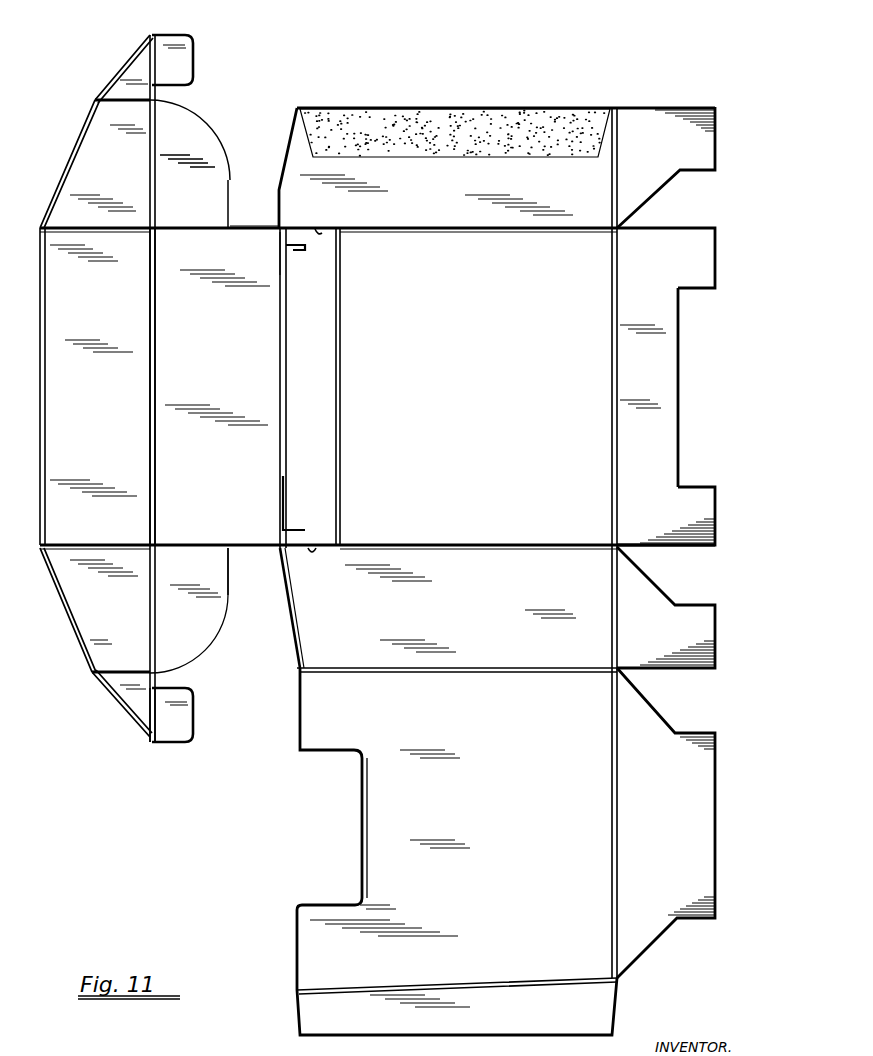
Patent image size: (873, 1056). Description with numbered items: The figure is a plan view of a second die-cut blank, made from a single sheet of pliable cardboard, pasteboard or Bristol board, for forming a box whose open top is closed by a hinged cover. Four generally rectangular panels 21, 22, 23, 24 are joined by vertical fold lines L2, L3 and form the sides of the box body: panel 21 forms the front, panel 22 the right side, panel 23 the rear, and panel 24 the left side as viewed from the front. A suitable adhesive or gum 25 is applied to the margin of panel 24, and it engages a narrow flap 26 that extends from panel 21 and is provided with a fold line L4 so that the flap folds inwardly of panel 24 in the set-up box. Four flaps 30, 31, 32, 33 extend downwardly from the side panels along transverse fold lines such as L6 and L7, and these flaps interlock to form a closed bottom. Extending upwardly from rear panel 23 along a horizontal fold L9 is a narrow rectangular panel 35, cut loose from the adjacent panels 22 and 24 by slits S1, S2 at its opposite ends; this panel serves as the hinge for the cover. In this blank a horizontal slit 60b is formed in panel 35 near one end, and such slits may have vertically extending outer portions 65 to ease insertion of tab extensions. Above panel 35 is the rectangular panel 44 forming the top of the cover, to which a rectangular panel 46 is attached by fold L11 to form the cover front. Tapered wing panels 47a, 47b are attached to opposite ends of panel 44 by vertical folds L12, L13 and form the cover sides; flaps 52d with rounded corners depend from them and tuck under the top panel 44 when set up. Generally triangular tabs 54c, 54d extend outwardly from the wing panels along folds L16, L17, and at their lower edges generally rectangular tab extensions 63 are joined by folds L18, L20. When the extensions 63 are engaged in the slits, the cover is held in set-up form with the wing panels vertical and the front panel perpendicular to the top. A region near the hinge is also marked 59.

The fold L20 is at (150, 60).
The triangular tab 54d is at (120, 90).
The fold L17 is at (100, 106).
The tapered wing panel 47b is at (88, 163).
The flap 52d is at (200, 143).
The tab extension 63 is at (181, 55).
The slot 59 is at (265, 228).
The horizontal slit 60b is at (278, 275).
The vertical fold L13 is at (72, 232).
The rectangular panel 46 is at (60, 293).
The fold L11 is at (150, 285).
The rectangular panel 44 is at (178, 384).
The vertical fold L12 is at (78, 543).
The tapered wing panel 47a is at (88, 592).
The fold L16 is at (93, 658).
The triangular tab 54c is at (135, 700).
The fold L18 is at (148, 728).
The slit S2 is at (322, 234).
The vertically extending outer portion 65 is at (306, 256).
The horizontal fold L9 is at (340, 380).
The narrow rectangular panel 35 is at (318, 410).
The slit S1 is at (313, 556).
The adhesive 25 is at (488, 115).
The flap 33 is at (698, 148).
The panel 24 is at (625, 200).
The vertical fold line L3 is at (583, 230).
The horizontal fold line L7 is at (618, 290).
The panel 23 is at (605, 378).
The flap 32 is at (665, 456).
The vertical fold line L2 is at (580, 548).
The horizontal fold line L6 is at (620, 592).
The flap 31 is at (698, 620).
The panel 22 is at (620, 670).
The flap 30 is at (700, 835).
The fold line L4 is at (540, 985).
The panel 21 is at (620, 968).
The narrow flap 26 is at (447, 1025).